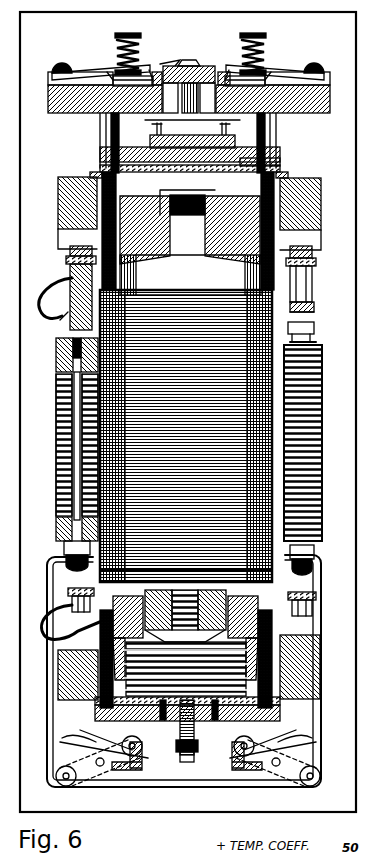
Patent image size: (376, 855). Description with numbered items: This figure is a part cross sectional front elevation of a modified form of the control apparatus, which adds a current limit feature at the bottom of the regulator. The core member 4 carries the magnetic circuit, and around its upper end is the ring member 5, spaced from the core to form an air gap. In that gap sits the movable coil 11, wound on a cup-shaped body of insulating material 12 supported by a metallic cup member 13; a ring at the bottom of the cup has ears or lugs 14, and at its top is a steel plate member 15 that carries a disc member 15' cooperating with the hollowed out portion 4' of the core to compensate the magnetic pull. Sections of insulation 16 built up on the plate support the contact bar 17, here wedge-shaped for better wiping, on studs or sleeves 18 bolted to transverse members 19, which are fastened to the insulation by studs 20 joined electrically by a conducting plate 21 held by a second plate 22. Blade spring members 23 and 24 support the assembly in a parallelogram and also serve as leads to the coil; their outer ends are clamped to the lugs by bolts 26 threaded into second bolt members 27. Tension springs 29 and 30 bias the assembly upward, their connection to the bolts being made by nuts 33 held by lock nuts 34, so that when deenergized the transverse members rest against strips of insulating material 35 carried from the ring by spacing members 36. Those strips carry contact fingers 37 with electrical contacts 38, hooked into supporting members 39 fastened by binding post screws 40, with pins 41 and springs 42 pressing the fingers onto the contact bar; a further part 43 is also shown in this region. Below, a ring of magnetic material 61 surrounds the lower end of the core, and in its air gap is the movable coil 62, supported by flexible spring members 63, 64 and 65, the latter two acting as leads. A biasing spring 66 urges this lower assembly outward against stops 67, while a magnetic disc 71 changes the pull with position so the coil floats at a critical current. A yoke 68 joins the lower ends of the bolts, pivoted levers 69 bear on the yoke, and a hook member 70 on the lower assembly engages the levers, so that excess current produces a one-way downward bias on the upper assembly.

The core member 4 is at (186, 389).
The hollowed out portion of core 4' is at (190, 273).
The ring member 5 is at (316, 204).
The movable coil 11 is at (102, 245).
The cup-shaped body of insulating material 12 is at (90, 171).
The metallic cup member 13 is at (286, 172).
The ears or lugs 14 is at (66, 264).
The metal plate member 15 is at (286, 158).
The disc member 15' is at (191, 204).
The sections of insulation 16 is at (100, 167).
The contact bar 17 is at (189, 89).
The studs or sleeves 18 is at (208, 98).
The transverse members 19 is at (100, 122).
The studs 20 is at (111, 133).
The conducting plate 21 is at (276, 147).
The second plate 22 is at (192, 134).
The flexible steel blade spring member 23 is at (314, 310).
The flexible steel blade spring member 24 is at (60, 313).
The bolts 26 is at (70, 245).
The second bolt members 27 is at (68, 335).
The tension spring 29 is at (56, 444).
The tension spring 30 is at (322, 449).
The nuts 33 is at (56, 528).
The lock nuts 34 is at (64, 552).
The strips of insulating material 35 is at (52, 97).
The spacing members 36 is at (100, 147).
The contact fingers 37 is at (82, 68).
The electrical contacts 38 is at (192, 62).
The supporting members 39 is at (147, 76).
The binding post screws 40 is at (58, 66).
The pins 41 is at (126, 33).
The springs 42 is at (118, 55).
The link 43 is at (164, 64).
The ring of magnetic material 61 is at (320, 671).
The movable coil 62 is at (272, 646).
The flexible spring member 63 is at (196, 760).
The flexible spring member 64 is at (316, 601).
The flexible spring member 65 is at (84, 594).
The biasing spring 66 is at (250, 691).
The stops 67 is at (184, 744).
The yoke 68 is at (52, 681).
The pivoted levers 69 is at (188, 761).
The hook member 70 is at (148, 762).
The magnetic disc 71 is at (290, 728).